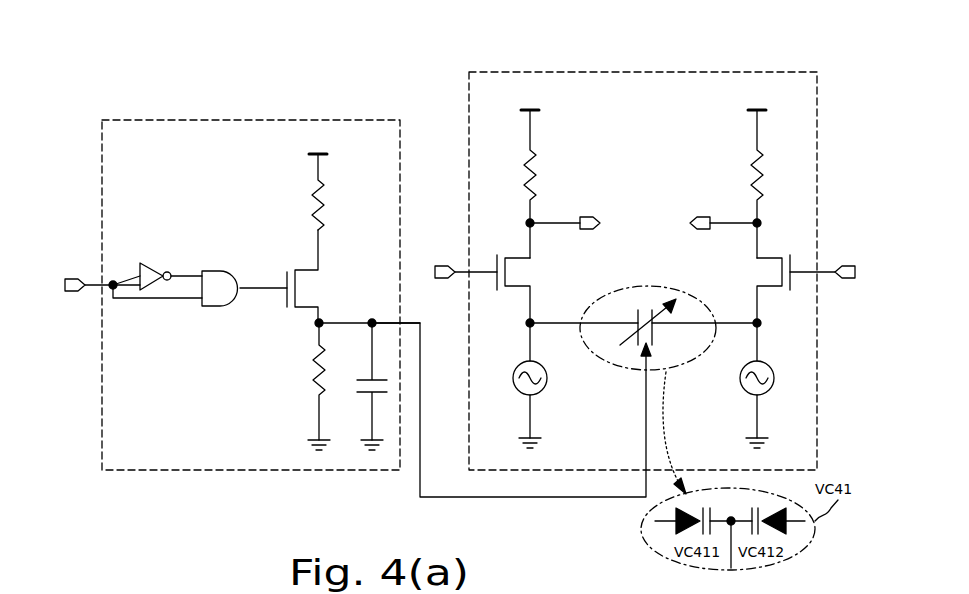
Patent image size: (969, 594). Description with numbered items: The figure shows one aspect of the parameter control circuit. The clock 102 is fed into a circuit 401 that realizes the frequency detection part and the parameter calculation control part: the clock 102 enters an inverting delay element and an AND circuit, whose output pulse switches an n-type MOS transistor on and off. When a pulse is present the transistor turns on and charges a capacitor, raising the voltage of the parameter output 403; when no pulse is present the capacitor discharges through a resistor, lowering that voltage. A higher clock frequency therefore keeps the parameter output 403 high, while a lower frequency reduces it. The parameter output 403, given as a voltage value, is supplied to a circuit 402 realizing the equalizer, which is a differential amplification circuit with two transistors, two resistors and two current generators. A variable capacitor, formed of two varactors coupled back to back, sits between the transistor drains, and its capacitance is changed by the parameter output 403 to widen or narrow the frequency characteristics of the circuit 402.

The clock 102 is at (72, 292).
The circuit realizing the frequency detection part and parameter calculation control 401 is at (215, 120).
The circuit realizing the equalizer 402 is at (818, 172).
The parameter output 403 is at (455, 497).